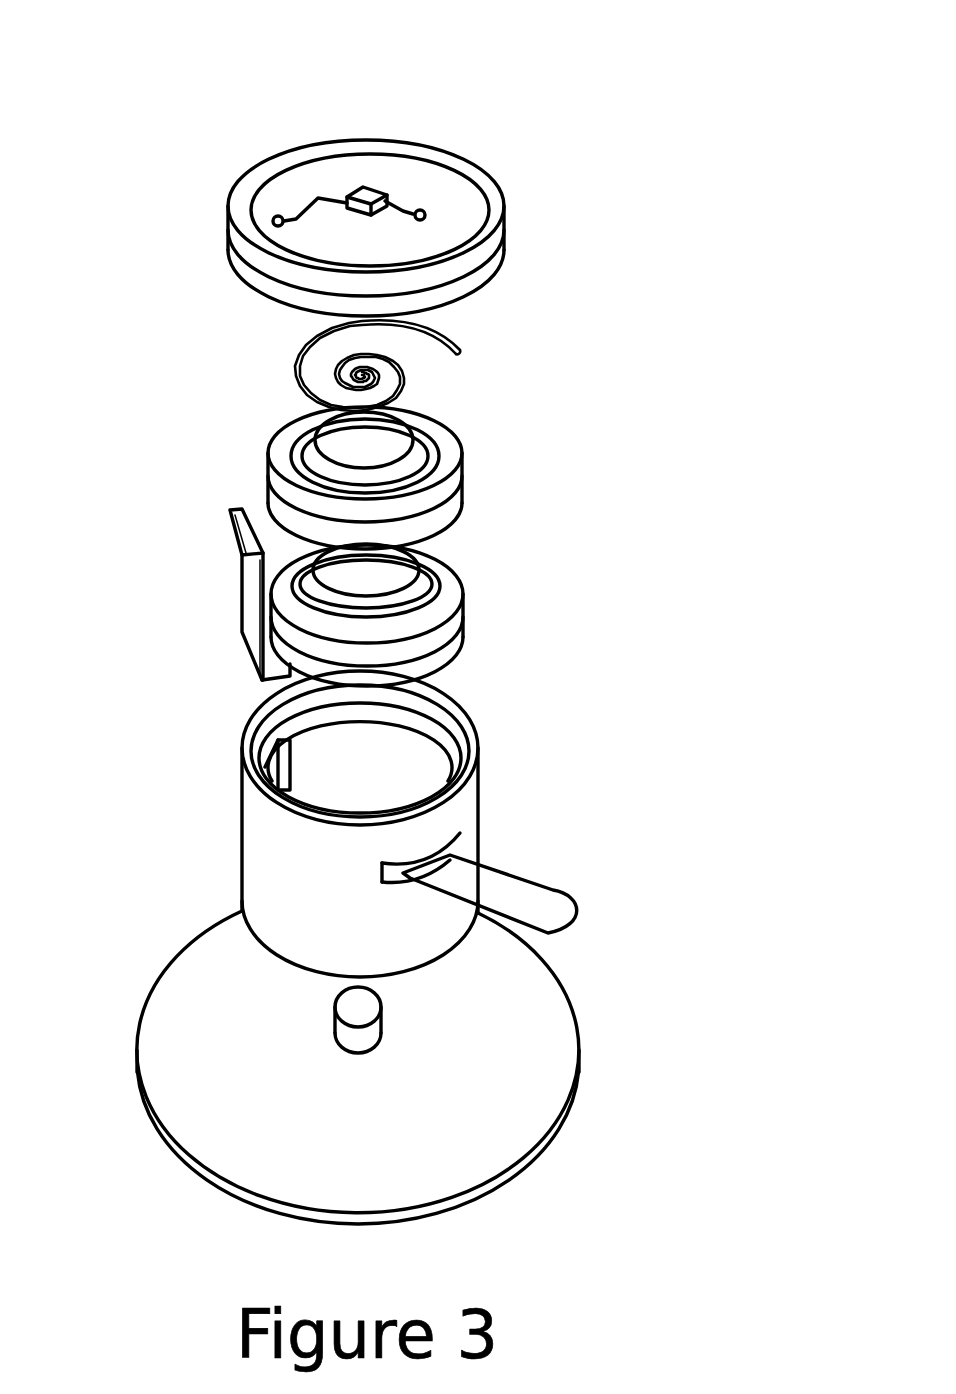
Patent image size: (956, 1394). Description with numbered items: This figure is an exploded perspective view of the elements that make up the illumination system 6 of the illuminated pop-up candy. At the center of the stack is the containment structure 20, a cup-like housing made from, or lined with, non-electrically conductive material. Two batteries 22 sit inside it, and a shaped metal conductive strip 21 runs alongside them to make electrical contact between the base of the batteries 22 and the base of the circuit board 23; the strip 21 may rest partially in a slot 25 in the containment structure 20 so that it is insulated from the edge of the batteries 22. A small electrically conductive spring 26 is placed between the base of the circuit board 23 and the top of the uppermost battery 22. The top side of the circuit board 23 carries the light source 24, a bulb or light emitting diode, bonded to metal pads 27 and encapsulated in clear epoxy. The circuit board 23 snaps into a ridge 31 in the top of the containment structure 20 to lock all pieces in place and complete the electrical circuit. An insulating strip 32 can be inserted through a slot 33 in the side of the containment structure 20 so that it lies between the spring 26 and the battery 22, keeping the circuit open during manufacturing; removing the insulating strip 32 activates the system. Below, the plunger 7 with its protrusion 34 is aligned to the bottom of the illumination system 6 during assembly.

The illumination system 6 is at (452, 139).
The plunger 7 is at (197, 983).
The containment structure 20 is at (483, 777).
The conductive strip 21 is at (252, 578).
The batteries 22 is at (487, 418).
The circuit board 23 is at (510, 243).
The light source 24 is at (360, 195).
The slot 25 is at (270, 765).
The electrically conductive spring 26 is at (460, 343).
The metal pads 27 is at (427, 210).
The ridge 31 is at (415, 712).
The insulating strip 32 is at (537, 900).
The slot 33 is at (460, 841).
The protrusion 34 is at (382, 1013).